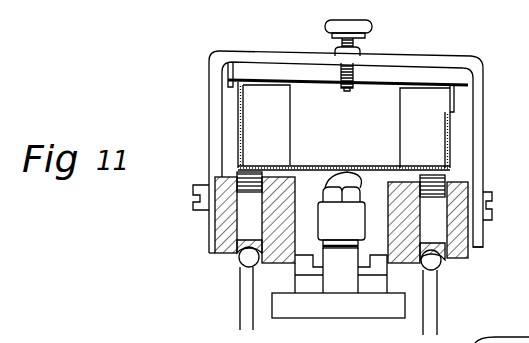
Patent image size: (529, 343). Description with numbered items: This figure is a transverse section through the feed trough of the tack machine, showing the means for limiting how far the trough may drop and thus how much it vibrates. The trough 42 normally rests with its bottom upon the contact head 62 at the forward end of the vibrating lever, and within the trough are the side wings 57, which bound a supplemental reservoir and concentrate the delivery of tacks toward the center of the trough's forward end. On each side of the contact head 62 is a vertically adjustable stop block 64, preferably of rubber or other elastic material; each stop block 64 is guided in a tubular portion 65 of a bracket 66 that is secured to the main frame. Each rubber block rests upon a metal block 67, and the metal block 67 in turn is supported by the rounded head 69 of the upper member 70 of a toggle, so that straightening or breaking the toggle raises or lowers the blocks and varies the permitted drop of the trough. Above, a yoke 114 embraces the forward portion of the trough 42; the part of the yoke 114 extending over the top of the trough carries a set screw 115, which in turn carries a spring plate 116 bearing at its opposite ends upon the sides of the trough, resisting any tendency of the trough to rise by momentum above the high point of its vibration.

The yoke 114 is at (211, 131).
The set screw 115 is at (360, 42).
The spring plate 116 is at (319, 87).
The side wings 57 is at (290, 123).
The trough 42 is at (365, 167).
The stop blocks 64 is at (253, 178).
The metal block 67 is at (341, 220).
The bracket 66 is at (213, 247).
The tubular portions 65 is at (469, 257).
The contact head 62 is at (357, 195).
The rounded head 69 is at (242, 260).
The upper member of toggle 70 is at (242, 316).